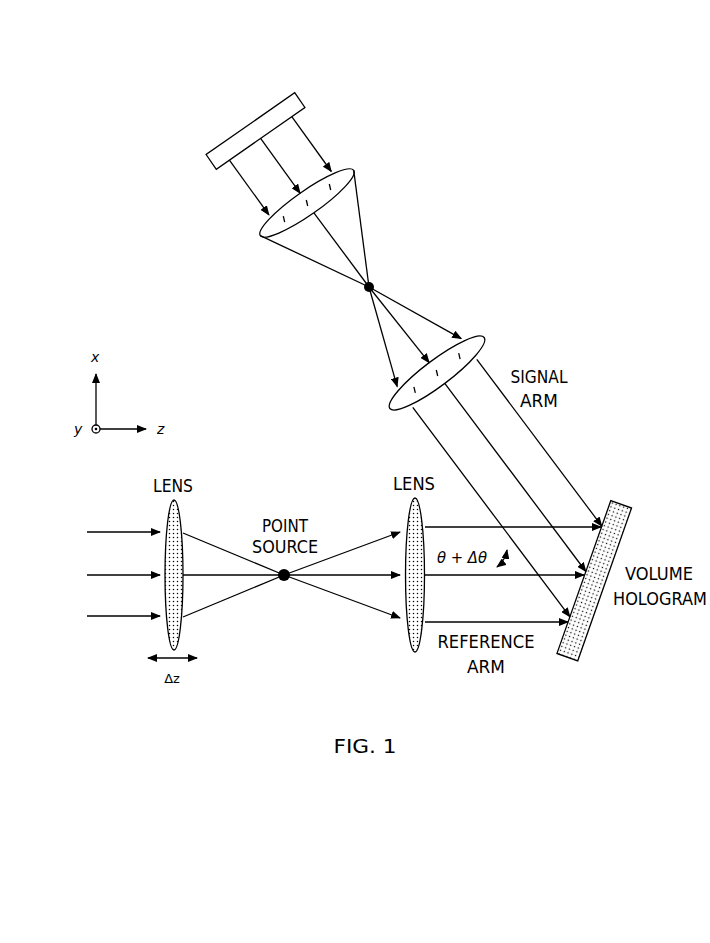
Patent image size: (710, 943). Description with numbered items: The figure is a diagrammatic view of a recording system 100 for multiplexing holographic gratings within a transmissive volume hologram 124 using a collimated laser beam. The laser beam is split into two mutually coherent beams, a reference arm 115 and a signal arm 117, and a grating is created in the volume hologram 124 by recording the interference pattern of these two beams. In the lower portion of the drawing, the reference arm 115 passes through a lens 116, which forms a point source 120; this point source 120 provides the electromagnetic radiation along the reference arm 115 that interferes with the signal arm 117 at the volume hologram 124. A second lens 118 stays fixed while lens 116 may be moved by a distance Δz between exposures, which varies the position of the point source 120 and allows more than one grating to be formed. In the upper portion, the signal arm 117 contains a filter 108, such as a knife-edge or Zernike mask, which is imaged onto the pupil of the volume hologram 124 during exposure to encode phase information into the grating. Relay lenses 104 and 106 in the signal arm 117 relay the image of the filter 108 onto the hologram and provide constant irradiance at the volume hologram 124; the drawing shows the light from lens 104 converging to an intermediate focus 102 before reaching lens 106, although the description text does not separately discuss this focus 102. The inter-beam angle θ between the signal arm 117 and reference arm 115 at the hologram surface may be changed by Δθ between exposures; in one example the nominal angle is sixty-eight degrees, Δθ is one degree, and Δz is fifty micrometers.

The recording system 100 is at (582, 138).
The focal point 102 is at (372, 283).
The relay lens 104 is at (352, 166).
The relay lens 106 is at (484, 337).
The filter 108 is at (300, 103).
The reference arm 115 is at (87, 616).
The lens 116 is at (165, 520).
The signal arm 117 is at (485, 510).
The lens 118 is at (405, 520).
The point source 120 is at (287, 580).
The volume hologram 124 is at (577, 662).